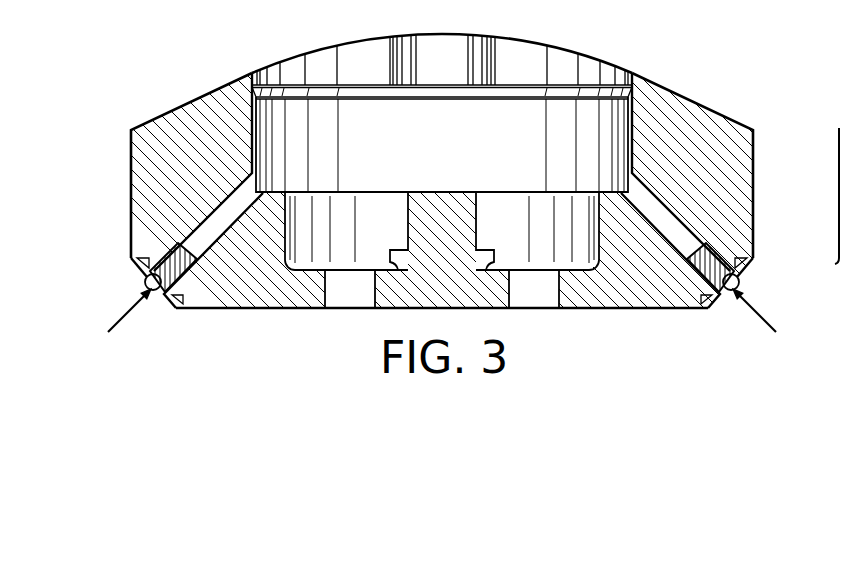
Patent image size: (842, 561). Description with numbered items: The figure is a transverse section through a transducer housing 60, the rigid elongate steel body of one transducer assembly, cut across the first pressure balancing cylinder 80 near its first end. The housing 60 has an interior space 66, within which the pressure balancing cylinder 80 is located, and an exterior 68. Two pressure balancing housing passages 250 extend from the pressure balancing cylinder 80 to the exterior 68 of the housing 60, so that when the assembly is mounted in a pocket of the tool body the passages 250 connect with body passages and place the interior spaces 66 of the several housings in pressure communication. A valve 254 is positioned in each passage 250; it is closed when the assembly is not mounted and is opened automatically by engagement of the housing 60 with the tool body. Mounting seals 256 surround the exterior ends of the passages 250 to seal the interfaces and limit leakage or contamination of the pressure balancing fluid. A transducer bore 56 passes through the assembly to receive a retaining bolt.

The transducer bore 56 is at (346, 298).
The transducer housing 60 is at (680, 117).
The interior space 66 is at (406, 160).
The exterior 68 is at (195, 98).
The first pressure balancing cylinder 80 is at (562, 113).
The pressure balancing housing passage 250 is at (220, 223).
The valve 254 is at (153, 293).
The mounting seal 256 is at (170, 307).